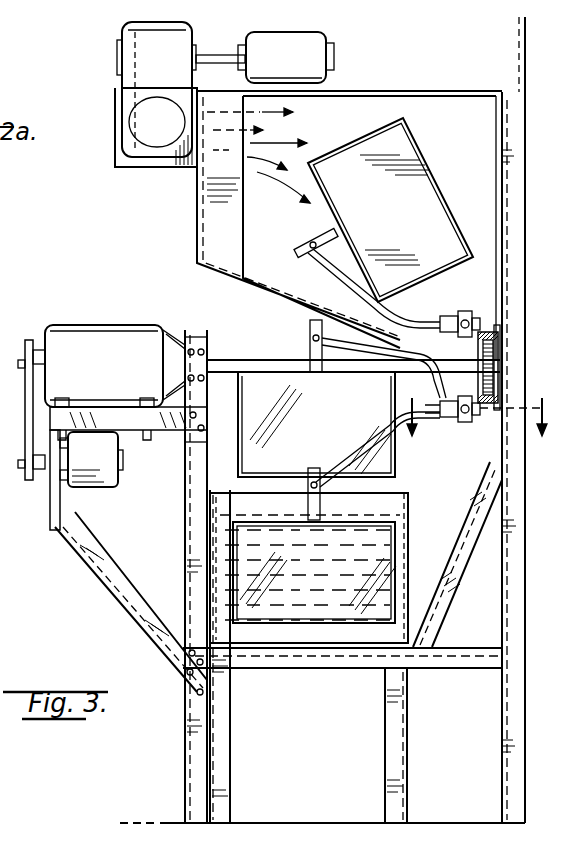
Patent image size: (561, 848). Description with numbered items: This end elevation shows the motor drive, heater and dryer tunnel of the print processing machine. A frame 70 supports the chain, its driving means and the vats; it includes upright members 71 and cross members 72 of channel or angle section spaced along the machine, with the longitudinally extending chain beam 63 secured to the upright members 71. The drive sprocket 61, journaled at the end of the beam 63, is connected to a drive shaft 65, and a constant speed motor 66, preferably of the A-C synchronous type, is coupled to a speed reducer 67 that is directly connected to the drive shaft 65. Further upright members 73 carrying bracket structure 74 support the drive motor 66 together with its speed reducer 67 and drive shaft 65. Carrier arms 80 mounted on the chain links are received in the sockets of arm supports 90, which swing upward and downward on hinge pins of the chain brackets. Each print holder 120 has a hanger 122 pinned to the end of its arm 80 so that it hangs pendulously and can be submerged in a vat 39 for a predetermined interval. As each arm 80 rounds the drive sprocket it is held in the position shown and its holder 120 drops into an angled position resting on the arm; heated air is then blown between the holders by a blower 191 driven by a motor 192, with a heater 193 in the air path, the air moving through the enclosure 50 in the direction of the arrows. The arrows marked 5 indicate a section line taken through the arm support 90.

The section line 5- 5 is at (474, 405).
The tank 39 is at (410, 536).
The hopper 50 is at (193, 223).
The drive sprocket 61 is at (488, 385).
The beam 63 is at (500, 352).
The drive shaft 65 is at (250, 362).
The constant speed motor 66 is at (106, 488).
The speed reducer 67 is at (110, 378).
The frame 70 is at (178, 737).
The upright members 71 is at (518, 694).
The cross members 72 is at (316, 670).
The upright members 73 is at (186, 544).
The bracket structure 74 is at (106, 590).
The carrier arm 80 is at (336, 336).
The arm support 90 is at (444, 318).
The print holder 120 is at (418, 136).
The hanger 122 is at (306, 239).
The blower 191 is at (138, 50).
The motor 192 is at (326, 46).
The heater 193 is at (150, 166).